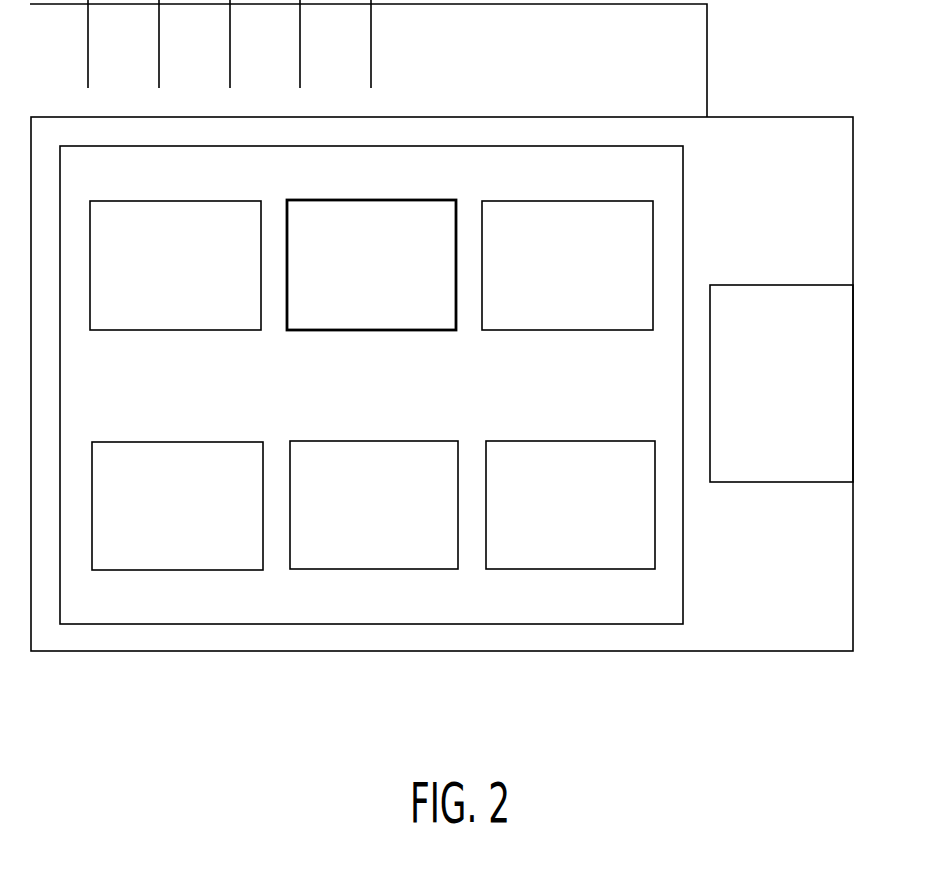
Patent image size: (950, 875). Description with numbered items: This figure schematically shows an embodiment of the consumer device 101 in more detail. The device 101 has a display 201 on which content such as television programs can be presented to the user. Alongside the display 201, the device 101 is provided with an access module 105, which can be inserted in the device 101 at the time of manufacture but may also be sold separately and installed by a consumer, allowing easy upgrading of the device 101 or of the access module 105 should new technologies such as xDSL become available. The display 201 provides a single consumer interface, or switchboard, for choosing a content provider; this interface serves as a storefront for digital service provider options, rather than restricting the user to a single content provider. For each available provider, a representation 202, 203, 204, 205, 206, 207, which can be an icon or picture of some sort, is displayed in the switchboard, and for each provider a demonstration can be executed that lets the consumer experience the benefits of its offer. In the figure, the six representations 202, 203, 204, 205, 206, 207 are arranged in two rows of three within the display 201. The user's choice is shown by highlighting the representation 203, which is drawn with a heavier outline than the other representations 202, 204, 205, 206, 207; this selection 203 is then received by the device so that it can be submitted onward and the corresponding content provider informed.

The consumer device 101 is at (783, 117).
The access module 105 is at (782, 483).
The display 201 is at (288, 625).
The representation 202 is at (170, 331).
The representation 203 is at (385, 331).
The representation 204 is at (568, 331).
The representation 205 is at (180, 571).
The representation 206 is at (394, 570).
The representation 207 is at (578, 570).